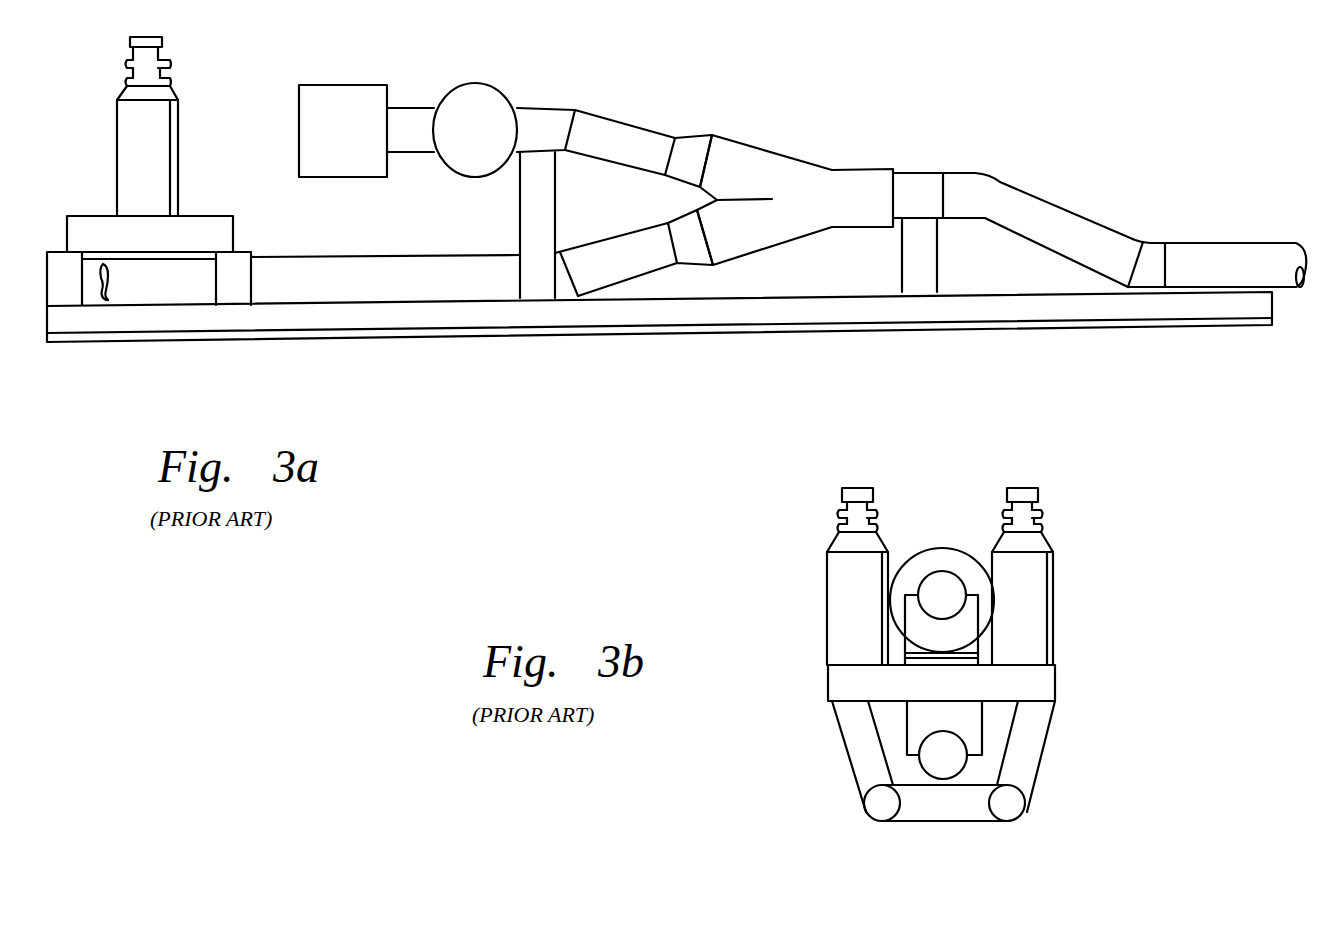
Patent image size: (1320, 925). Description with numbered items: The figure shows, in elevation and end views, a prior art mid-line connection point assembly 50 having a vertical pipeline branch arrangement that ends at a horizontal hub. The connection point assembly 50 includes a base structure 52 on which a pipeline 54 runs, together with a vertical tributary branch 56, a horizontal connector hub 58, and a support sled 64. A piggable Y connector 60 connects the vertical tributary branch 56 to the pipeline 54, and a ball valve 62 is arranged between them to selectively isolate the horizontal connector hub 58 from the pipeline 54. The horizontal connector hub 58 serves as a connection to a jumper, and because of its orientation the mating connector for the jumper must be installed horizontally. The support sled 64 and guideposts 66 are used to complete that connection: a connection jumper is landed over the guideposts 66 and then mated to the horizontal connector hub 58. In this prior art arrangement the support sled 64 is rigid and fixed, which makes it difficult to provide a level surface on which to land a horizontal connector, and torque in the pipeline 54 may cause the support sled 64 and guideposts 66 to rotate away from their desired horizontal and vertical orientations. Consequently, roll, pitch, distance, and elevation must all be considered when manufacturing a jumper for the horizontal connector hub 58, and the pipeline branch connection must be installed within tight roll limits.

In FIG. 3A, the connection point assembly 50 is at (1066, 101).
In FIG. 3B, the connection point assembly 50 is at (1127, 517).
In FIG. 3A, the base structure 52 is at (681, 335).
In FIG. 3B, the base structure 52 is at (953, 822).
In FIG. 3A, the pipeline 54 is at (336, 254).
In FIG. 3A, the vertical tributary branch 56 is at (627, 120).
In FIG. 3A, the horizontal connector hub 58 is at (342, 84).
In FIG. 3A, the piggable Y connector 60 is at (776, 150).
In FIG. 3A, the ball valve 62 is at (475, 83).
In FIG. 3A, the support sled 64 is at (88, 215).
In FIG. 3B, the support sled 64 is at (1058, 690).
In FIG. 3A, the guideposts 66 is at (123, 88).
In FIG. 3B, the guideposts 66 is at (853, 488).